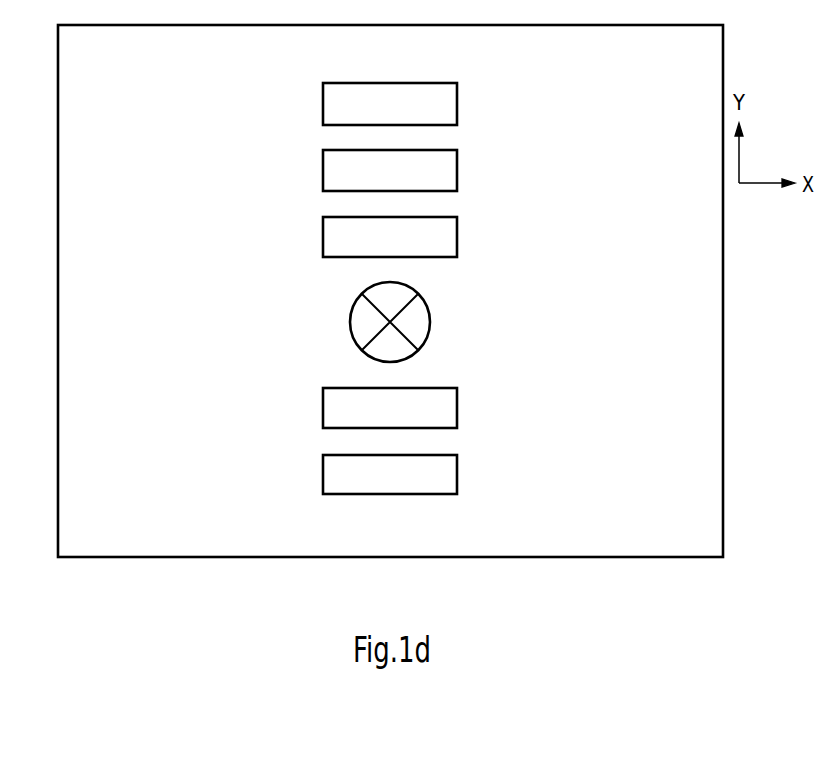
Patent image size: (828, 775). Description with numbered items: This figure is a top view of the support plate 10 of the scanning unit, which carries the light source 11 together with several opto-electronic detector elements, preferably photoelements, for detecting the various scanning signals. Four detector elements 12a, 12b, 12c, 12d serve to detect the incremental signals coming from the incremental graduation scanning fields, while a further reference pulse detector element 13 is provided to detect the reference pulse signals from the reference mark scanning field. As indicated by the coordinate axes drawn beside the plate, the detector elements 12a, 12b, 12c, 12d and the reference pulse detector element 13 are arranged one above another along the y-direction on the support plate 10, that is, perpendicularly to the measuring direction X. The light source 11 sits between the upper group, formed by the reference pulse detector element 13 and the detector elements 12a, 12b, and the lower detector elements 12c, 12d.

The support plate 10 is at (58, 253).
The light source 11 is at (424, 323).
The detector element 12a is at (323, 171).
The detector element 12b is at (323, 238).
The detector element 12c is at (323, 408).
The detector element 12d is at (323, 475).
The reference pulse detector element 13 is at (323, 104).